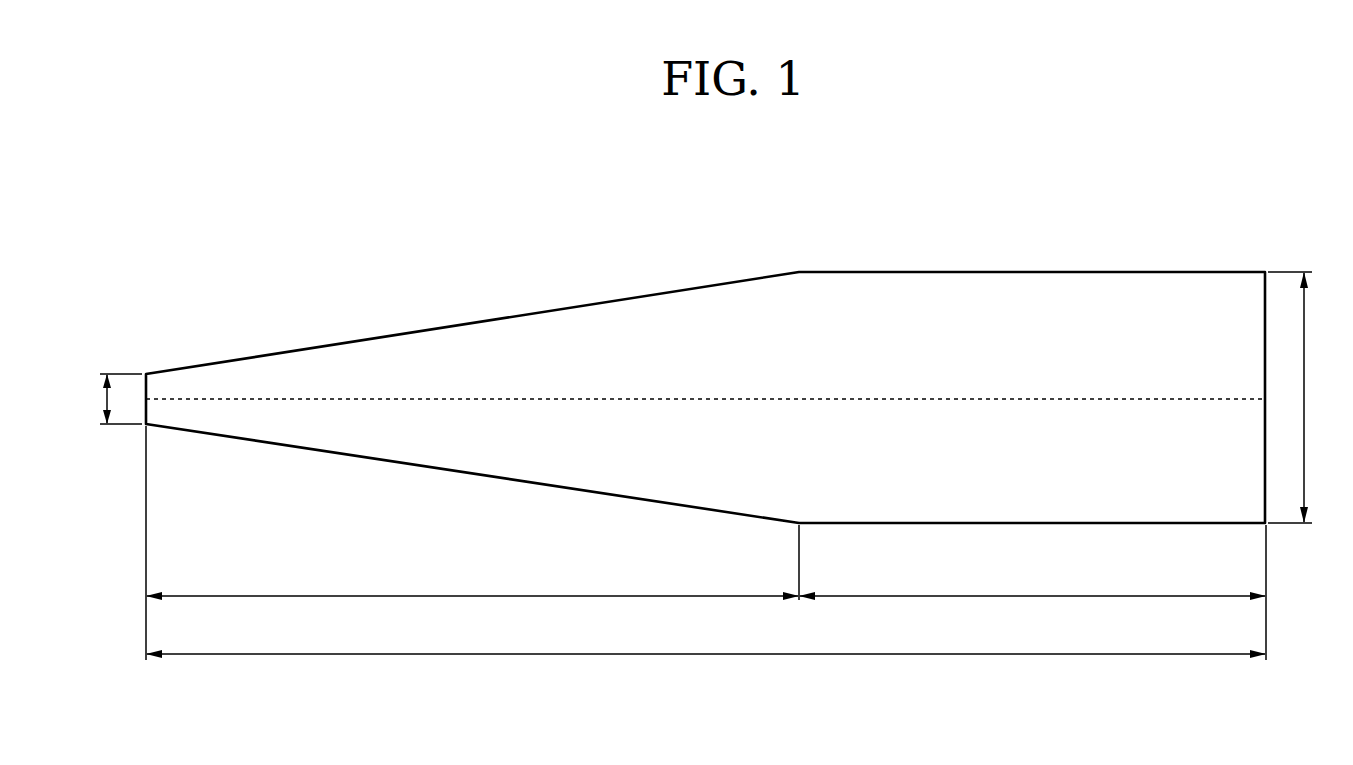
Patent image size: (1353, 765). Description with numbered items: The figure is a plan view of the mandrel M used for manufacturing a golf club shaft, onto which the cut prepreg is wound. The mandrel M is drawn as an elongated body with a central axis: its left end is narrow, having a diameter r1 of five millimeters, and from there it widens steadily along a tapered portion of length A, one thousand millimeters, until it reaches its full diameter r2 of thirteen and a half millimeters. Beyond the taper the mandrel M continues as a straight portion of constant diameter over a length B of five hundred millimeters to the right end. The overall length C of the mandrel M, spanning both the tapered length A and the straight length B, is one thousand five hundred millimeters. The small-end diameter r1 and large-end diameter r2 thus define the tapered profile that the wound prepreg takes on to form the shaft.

The mandrel M is at (433, 286).
The small-end diameter r1 is at (107, 399).
The large-end diameter r2 is at (1302, 397).
The tapered portion length A is at (472, 580).
The straight portion length B is at (1032, 580).
The overall length C is at (706, 638).